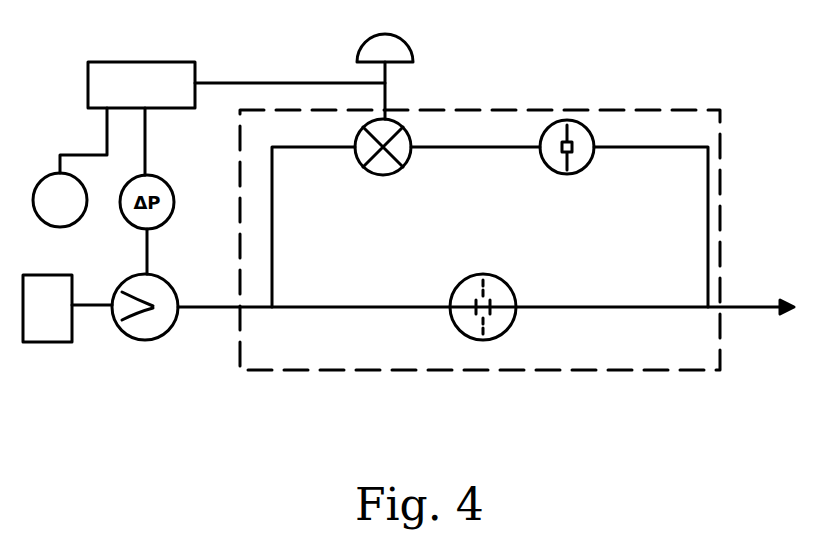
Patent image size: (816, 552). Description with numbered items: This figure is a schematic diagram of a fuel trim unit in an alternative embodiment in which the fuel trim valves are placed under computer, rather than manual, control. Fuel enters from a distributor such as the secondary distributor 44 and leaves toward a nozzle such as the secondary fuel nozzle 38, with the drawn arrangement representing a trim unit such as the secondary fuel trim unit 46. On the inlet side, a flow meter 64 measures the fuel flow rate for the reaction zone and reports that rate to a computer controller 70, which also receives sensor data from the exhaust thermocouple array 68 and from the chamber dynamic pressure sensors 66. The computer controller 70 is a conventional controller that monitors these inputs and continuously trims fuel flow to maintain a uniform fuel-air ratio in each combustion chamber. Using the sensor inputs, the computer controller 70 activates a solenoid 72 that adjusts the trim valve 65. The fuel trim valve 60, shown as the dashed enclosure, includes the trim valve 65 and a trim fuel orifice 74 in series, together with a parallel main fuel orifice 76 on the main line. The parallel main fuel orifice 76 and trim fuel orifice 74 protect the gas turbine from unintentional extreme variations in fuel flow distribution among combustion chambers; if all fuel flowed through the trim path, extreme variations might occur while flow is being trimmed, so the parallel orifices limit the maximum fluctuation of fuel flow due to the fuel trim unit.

The computer controller 70 is at (222, 118).
The chamber dynamic pressure sensors 66 is at (40, 222).
The exhaust thermocouple array 68 is at (80, 222).
The flow meter 64 is at (163, 283).
The fuel trim valve 60 is at (500, 110).
The solenoid 72 is at (389, 68).
The trim valve 65 is at (395, 173).
The trim fuel orifice 74 is at (578, 171).
The main fuel orifice 76 is at (505, 334).
The secondary distributor 44 is at (67, 308).
The secondary fuel trim unit 46 is at (538, 50).
The secondary fuel nozzle 38 is at (766, 314).